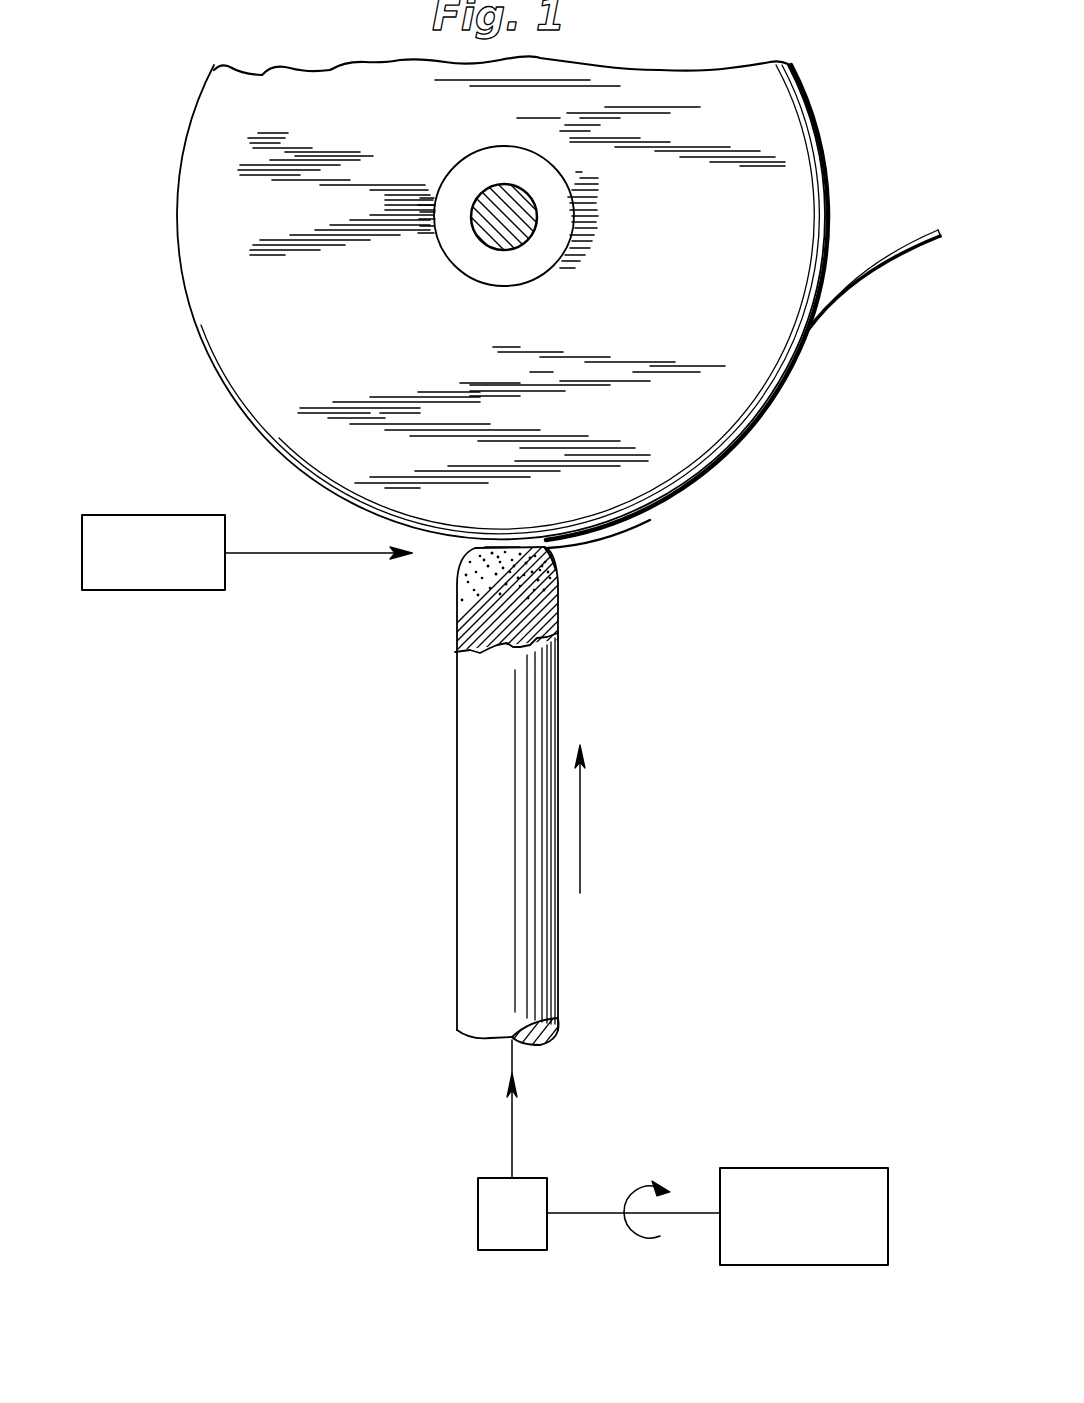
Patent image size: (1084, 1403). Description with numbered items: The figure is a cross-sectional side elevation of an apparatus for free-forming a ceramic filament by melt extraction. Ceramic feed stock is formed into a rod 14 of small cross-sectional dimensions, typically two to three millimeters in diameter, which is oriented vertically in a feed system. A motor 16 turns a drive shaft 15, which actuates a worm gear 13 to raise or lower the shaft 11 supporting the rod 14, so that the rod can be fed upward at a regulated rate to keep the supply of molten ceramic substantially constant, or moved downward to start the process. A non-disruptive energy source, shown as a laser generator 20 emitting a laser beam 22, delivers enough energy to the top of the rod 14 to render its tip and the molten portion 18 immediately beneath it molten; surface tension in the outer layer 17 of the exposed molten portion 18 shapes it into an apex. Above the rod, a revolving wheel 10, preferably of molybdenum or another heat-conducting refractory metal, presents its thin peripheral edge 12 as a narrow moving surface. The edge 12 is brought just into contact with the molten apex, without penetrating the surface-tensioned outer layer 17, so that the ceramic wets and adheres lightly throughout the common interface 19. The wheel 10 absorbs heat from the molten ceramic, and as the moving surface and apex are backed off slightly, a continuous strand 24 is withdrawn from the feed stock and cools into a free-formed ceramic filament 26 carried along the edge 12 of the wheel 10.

The revolving wheel 10 is at (184, 140).
The thin edge 12 is at (822, 238).
The ceramic filament 26 is at (850, 298).
The rod 14 is at (458, 918).
The molten portion 18 is at (462, 570).
The common interface 19 is at (499, 547).
The strand 24 is at (558, 556).
The outer layer 17 is at (565, 560).
The laser generator 20 is at (165, 592).
The laser beam 22 is at (320, 562).
The shaft 11 is at (511, 1120).
The worm gear 13 is at (478, 1232).
The drive shaft 15 is at (598, 1215).
The motor 16 is at (838, 1170).